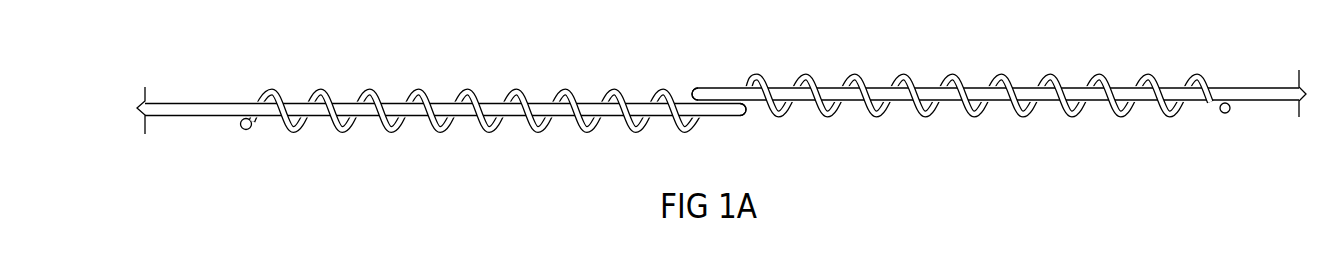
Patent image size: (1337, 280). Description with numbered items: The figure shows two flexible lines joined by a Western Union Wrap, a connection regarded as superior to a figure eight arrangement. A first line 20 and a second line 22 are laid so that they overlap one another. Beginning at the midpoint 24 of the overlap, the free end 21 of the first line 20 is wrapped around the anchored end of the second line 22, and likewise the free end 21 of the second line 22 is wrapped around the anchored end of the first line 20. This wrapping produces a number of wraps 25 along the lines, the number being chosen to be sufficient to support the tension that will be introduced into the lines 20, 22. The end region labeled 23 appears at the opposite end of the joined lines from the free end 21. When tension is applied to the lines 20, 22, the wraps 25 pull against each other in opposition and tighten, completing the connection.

The first line 20 is at (195, 102).
The free end 21 is at (1230, 111).
The second line 22 is at (1252, 86).
The eyelet at end of first rod 23 is at (247, 128).
The midpoint 24 is at (720, 102).
The wraps 25 is at (440, 133).